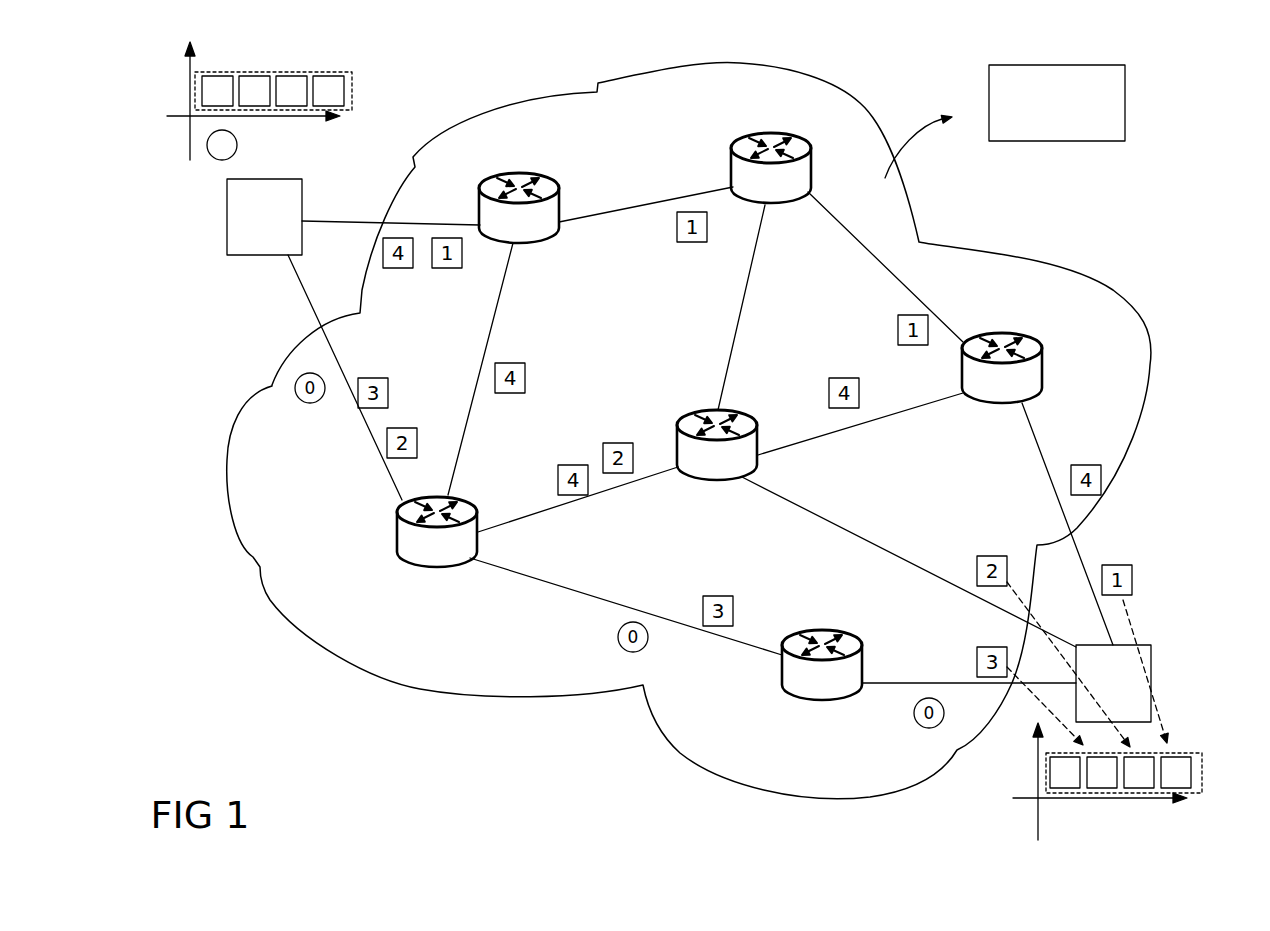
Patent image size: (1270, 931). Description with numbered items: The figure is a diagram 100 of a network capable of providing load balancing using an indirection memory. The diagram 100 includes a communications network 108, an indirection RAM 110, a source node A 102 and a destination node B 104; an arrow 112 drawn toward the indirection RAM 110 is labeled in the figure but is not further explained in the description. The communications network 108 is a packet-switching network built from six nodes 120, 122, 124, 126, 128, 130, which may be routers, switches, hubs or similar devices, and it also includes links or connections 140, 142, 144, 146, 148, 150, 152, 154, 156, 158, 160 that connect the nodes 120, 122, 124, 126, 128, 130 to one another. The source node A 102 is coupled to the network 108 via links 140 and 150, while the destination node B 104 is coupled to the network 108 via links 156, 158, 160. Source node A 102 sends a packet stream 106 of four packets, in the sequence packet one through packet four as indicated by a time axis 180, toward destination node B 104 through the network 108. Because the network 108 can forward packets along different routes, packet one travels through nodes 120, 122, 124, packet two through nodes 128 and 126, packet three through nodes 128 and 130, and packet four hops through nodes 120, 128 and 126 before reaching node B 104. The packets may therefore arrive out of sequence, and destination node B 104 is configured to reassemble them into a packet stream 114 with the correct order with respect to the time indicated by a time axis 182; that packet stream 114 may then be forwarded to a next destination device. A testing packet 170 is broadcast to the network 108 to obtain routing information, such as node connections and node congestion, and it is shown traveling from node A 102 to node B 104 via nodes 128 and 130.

The diagram 100 is at (243, 712).
The source node A 102 is at (228, 242).
The destination node B 104 is at (1152, 667).
The packet stream 106 is at (288, 72).
The communications network 108 is at (622, 76).
The indirection RAM 110 is at (1057, 103).
The arrow to controller 112 is at (878, 203).
The packet stream 114 is at (1150, 752).
The node 120 is at (517, 170).
The node 122 is at (777, 132).
The node 124 is at (1017, 337).
The node 126 is at (695, 408).
The node 128 is at (442, 565).
The node 130 is at (825, 698).
The link 140 is at (445, 223).
The link 142 is at (658, 203).
The link 144 is at (828, 210).
The link 146 is at (508, 275).
The link 148 is at (745, 290).
The link 150 is at (307, 313).
The link 152 is at (542, 585).
The link 154 is at (647, 482).
The link 156 is at (860, 533).
The link 158 is at (942, 675).
The link 160 is at (1037, 440).
The testing packet 170 is at (237, 139).
The time axis 180 is at (288, 118).
The time axis 182 is at (1038, 835).